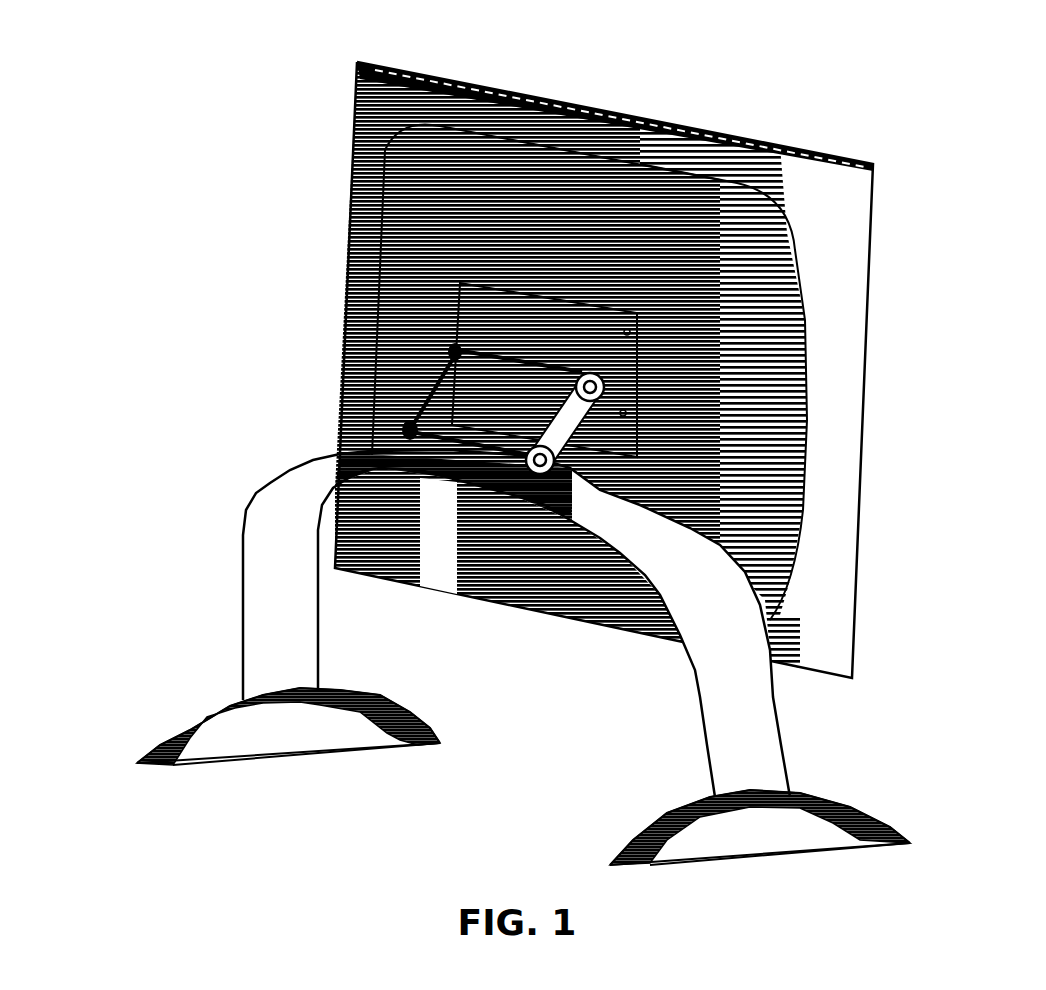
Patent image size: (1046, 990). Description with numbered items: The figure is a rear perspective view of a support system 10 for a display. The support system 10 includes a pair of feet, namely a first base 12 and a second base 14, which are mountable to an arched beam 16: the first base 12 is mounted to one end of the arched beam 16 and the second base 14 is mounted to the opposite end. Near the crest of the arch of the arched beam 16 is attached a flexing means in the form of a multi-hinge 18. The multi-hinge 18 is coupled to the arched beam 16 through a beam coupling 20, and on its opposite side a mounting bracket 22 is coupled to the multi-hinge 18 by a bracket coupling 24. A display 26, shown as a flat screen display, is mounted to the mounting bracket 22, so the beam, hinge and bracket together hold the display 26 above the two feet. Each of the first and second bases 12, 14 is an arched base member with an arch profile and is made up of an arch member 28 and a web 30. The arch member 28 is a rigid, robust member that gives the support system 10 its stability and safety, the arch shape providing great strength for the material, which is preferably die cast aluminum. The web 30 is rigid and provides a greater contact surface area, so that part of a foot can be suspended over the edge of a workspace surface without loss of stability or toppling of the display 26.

The support system 10 is at (494, 432).
The first base 12 is at (163, 740).
The second base 14 is at (633, 850).
The arched beam 16 is at (262, 493).
The multi-hinge 18 is at (477, 415).
The beam coupling 20 is at (403, 427).
The mounting bracket 22 is at (526, 339).
The bracket coupling 24 is at (450, 349).
The display 26 is at (355, 147).
The arch member 28 is at (202, 713).
The web 30 is at (274, 744).